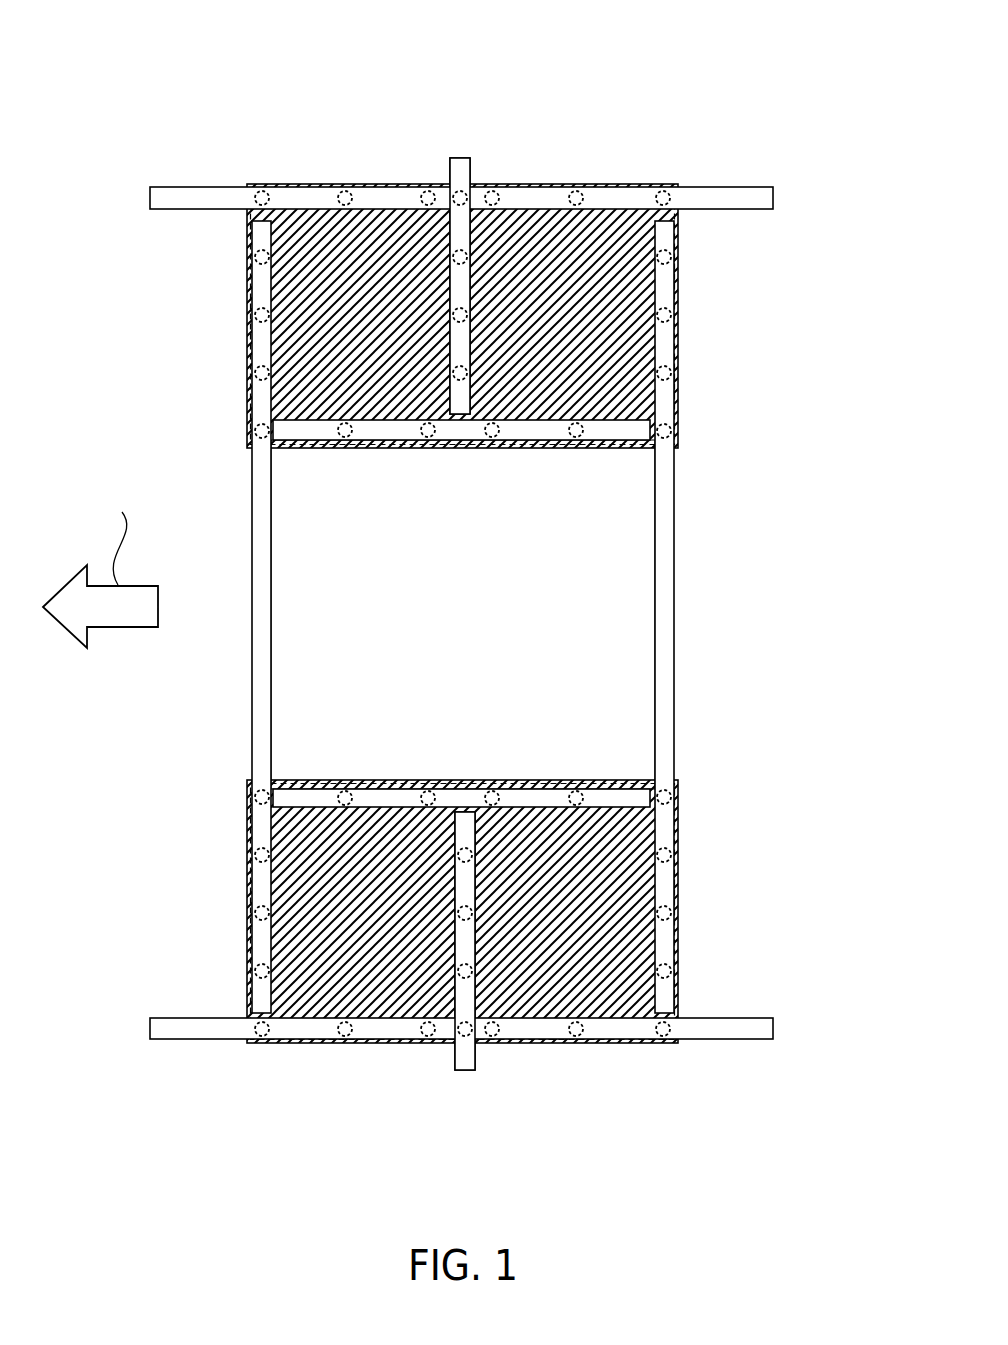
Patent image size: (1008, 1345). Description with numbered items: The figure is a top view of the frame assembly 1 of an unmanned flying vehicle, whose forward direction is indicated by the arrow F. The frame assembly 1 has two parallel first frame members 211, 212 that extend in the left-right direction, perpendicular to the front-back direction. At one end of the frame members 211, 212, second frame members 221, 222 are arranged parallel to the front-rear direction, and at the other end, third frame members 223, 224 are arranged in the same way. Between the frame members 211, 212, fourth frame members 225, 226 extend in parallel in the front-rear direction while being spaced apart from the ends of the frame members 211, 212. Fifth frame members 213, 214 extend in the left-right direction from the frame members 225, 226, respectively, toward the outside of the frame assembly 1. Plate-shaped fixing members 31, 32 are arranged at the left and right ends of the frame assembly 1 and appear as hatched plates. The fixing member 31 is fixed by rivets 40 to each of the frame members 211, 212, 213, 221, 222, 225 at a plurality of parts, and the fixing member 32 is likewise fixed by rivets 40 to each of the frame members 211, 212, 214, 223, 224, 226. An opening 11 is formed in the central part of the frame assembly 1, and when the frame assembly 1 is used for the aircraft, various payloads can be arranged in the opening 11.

The frame assembly 1 is at (462, 598).
The opening 11 is at (612, 654).
The fixing member 31 is at (575, 186).
The fixing member 32 is at (679, 880).
The rivets 40 is at (340, 193).
The first frame member 211 is at (252, 677).
The first frame member 212 is at (675, 547).
The fifth frame member 213 is at (457, 156).
The fifth frame member 214 is at (459, 1071).
The second frame member 221 is at (213, 186).
The second frame member 222 is at (705, 186).
The third frame member 223 is at (222, 1041).
The third frame member 224 is at (727, 1041).
The fourth frame member 225 is at (628, 431).
The fourth frame member 226 is at (383, 796).